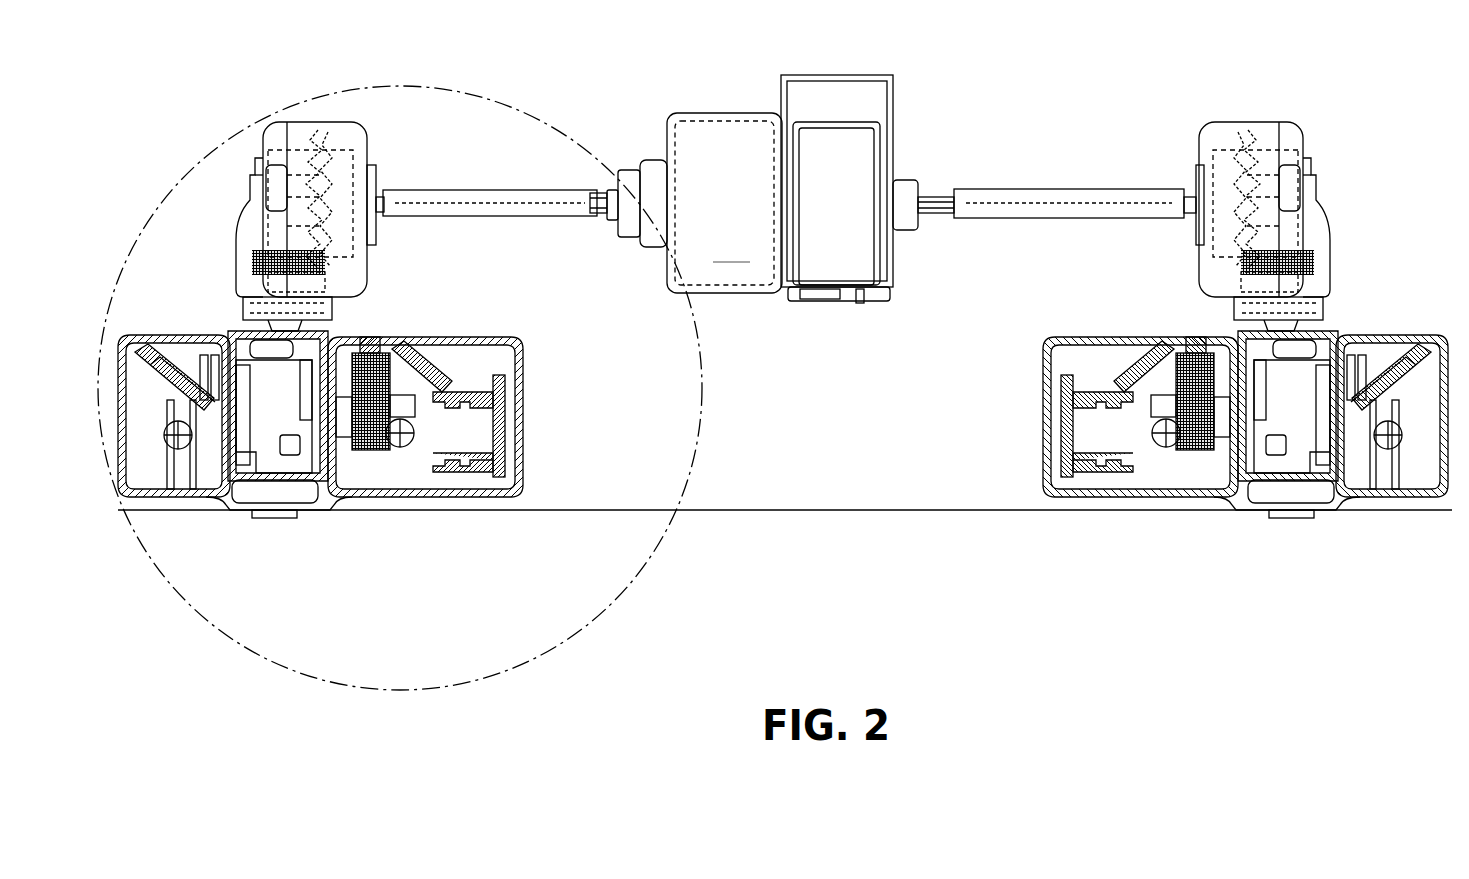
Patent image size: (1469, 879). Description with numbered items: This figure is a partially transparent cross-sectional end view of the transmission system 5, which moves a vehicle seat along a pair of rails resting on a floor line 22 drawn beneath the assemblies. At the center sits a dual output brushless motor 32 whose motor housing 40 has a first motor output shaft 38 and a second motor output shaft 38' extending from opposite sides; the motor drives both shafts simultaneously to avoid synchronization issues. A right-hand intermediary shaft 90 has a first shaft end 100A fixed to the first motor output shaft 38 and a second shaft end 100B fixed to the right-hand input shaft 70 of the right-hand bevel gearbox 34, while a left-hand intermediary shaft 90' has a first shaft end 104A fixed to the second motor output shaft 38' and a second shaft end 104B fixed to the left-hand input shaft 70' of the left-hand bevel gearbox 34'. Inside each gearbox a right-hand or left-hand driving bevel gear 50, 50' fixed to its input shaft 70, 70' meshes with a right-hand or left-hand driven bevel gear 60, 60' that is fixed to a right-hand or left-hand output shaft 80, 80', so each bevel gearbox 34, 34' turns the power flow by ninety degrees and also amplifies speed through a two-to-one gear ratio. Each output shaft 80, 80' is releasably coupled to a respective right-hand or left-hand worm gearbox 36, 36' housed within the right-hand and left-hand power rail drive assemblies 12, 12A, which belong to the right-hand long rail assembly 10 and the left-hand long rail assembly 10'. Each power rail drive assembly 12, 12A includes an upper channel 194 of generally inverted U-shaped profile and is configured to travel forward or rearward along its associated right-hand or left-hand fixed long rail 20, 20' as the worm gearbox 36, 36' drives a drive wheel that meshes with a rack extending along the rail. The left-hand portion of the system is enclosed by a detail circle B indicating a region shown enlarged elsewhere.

The transmission system 5 is at (1302, 162).
The right-hand long rail assembly 10 is at (1196, 417).
The left-hand long rail assembly 10' is at (370, 405).
The right-hand power rail drive assembly 12 is at (1238, 330).
The left-hand power rail drive assembly 12A is at (228, 340).
The right-hand fixed long rail 20 is at (1400, 384).
The left-hand fixed long rail 20' is at (174, 387).
The floor surface 22 is at (815, 507).
The dual output brushless motor 32 is at (848, 73).
The right-hand bevel gearbox 34 is at (1286, 178).
The left-hand bevel gearbox 34' is at (277, 196).
The right-hand worm gearbox 36 is at (1333, 499).
The left-hand worm gearbox 36' is at (336, 499).
The first motor output shaft 38 is at (929, 173).
The second motor output shaft 38' is at (635, 174).
The motor housing 40 is at (731, 112).
The right-hand driving bevel gear 50 is at (1232, 159).
The left-hand driving bevel gear 50' is at (334, 150).
The right-hand driven bevel gear 60 is at (1313, 250).
The left-hand driven bevel gear 60' is at (254, 247).
The right-hand input shaft 70 is at (1172, 183).
The left-hand input shaft 70' is at (387, 176).
The right-hand output shaft 80 is at (1320, 291).
The left-hand output shaft 80' is at (330, 302).
The right-hand intermediary shaft 90 is at (1069, 170).
The left-hand intermediary shaft 90' is at (490, 168).
The first shaft end 100A is at (946, 216).
The second shaft end 100B is at (1187, 220).
The first shaft end 104A is at (600, 216).
The second shaft end 104B is at (376, 230).
The upper channel 194 is at (222, 338).
The detail region B is at (527, 100).